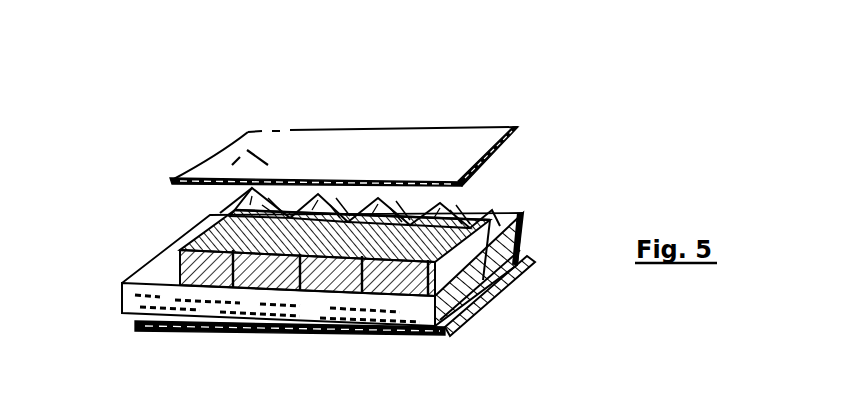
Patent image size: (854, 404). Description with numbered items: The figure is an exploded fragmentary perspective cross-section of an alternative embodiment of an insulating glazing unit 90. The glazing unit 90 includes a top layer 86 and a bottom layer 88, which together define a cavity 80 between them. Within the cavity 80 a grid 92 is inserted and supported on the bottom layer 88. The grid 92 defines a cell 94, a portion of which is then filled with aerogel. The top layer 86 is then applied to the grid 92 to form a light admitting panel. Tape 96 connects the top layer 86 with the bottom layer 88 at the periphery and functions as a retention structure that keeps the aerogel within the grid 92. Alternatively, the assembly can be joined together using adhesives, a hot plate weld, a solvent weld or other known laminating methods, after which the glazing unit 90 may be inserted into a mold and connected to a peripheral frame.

The top layer 86 is at (380, 127).
The glazing unit 90 is at (483, 81).
The grid 92 is at (480, 212).
The cavity 80 is at (487, 217).
The cell 94 is at (480, 307).
The bottom layer 88 is at (305, 333).
The tape 96 is at (118, 310).